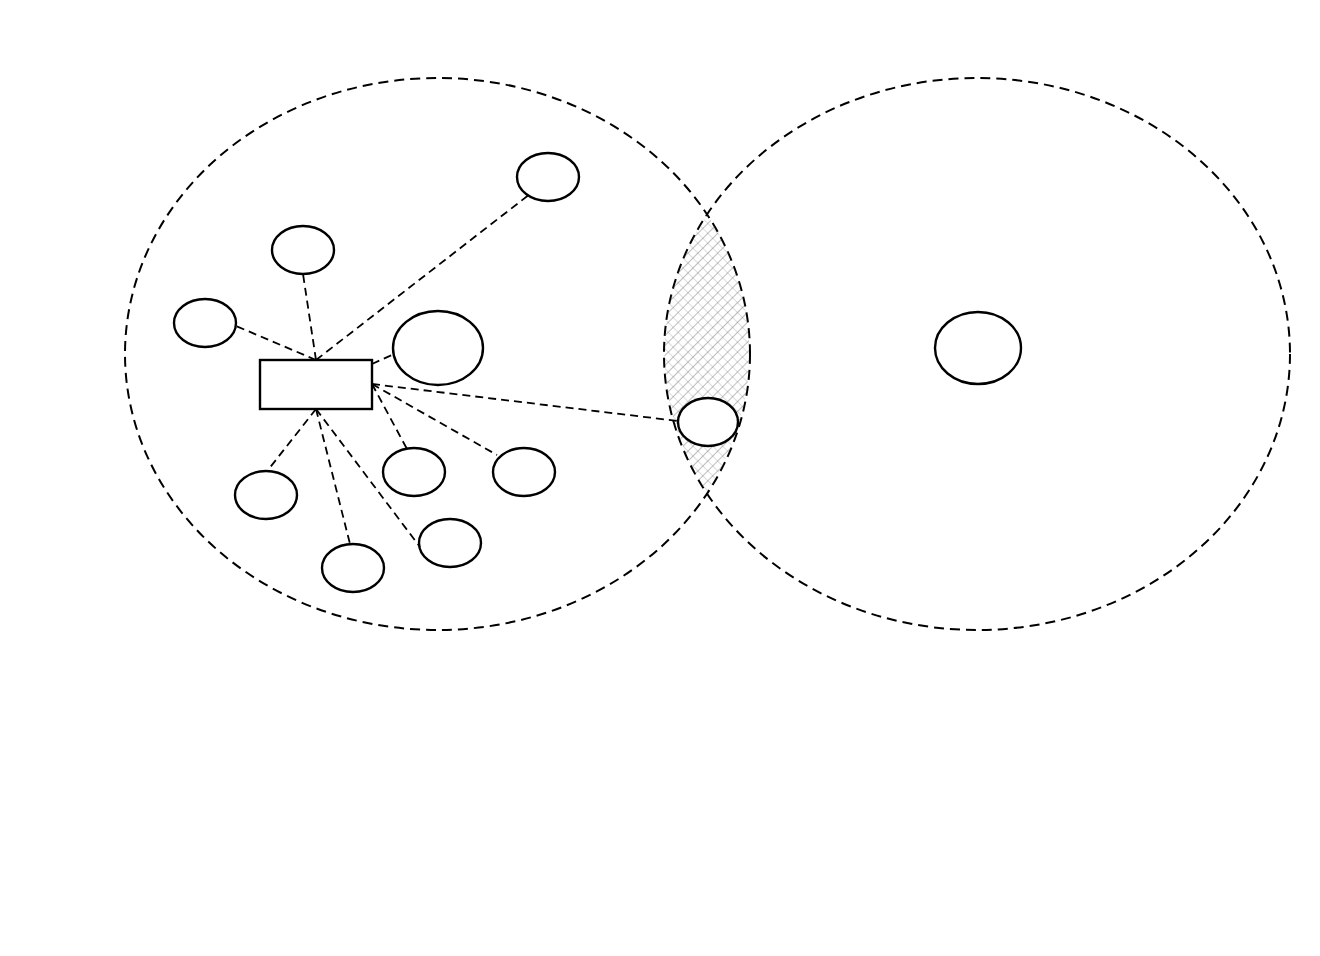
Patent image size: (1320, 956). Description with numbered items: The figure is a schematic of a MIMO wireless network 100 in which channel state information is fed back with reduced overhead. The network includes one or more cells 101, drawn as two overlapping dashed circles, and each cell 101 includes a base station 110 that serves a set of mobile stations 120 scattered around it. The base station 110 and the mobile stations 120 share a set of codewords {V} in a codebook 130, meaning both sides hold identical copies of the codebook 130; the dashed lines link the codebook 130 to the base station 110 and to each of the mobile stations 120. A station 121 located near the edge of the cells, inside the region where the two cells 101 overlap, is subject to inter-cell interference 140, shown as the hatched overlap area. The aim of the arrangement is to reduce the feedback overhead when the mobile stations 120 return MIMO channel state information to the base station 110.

The wireless network 100 is at (667, 890).
The cell 101 is at (467, 79).
The base station 110 is at (476, 324).
The mobile stations 120 is at (316, 227).
The stations near the edge of the cells 121 is at (709, 398).
The codebook 130 is at (260, 386).
The inter-cell interference 140 is at (737, 288).